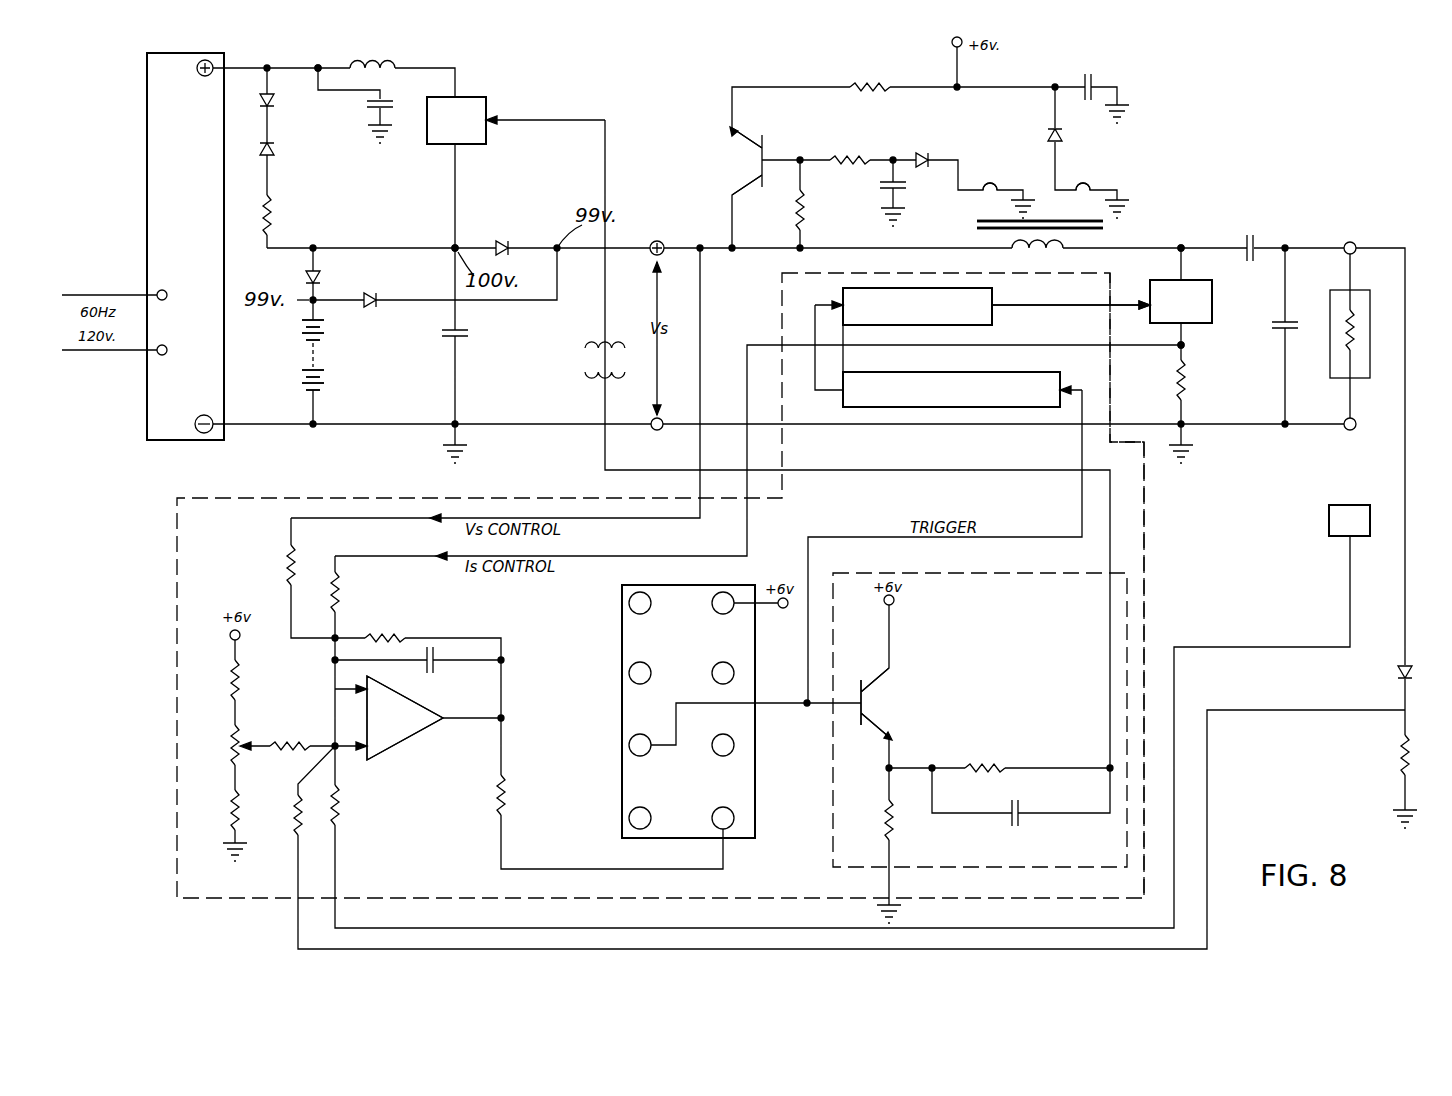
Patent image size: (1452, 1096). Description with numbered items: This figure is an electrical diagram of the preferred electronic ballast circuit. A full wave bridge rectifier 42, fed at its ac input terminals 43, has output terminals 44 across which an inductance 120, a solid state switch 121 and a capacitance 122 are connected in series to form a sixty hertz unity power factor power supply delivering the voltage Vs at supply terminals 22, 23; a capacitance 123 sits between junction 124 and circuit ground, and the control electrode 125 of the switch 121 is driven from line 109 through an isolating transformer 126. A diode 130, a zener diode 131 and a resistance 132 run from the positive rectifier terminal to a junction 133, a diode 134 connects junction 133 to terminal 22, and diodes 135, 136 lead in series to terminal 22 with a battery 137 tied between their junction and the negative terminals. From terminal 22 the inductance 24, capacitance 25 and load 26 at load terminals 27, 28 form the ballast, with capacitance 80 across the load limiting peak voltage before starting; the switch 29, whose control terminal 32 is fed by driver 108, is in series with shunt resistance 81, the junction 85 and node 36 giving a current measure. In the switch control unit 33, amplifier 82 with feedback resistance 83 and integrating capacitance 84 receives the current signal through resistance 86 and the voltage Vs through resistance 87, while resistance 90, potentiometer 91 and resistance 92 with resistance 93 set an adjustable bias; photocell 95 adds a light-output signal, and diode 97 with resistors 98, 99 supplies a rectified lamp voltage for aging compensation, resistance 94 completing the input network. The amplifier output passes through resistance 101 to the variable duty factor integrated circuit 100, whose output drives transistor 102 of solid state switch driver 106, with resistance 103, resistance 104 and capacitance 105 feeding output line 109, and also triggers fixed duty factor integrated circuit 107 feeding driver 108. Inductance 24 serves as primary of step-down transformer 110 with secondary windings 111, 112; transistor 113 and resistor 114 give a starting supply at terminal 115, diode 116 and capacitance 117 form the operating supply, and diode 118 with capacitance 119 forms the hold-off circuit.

The supply terminal 22 is at (658, 241).
The supply terminal 23 is at (659, 431).
The inductance 24 is at (1063, 252).
The capacitance 25 is at (1254, 244).
The load 26 is at (1371, 298).
The load terminal 27 is at (1350, 242).
The load terminal 28 is at (1348, 430).
The switch 29 is at (1212, 296).
The control terminal 32 is at (1114, 300).
The switch control unit 33 is at (1144, 612).
The junction 36 is at (1182, 246).
The rectifier 42 is at (147, 118).
The AC input terminals 43 is at (160, 359).
The terminals of the rectifier 44 is at (212, 62).
The capacitance 80 is at (1276, 331).
The resistance 81 is at (1187, 396).
The amplifier 82 is at (408, 735).
The feedback resistance 83 is at (390, 636).
The capacitance 84 is at (436, 668).
The junction 85 is at (1185, 347).
The resistance 86 is at (342, 592).
The resistance 87 is at (288, 560).
The resistance 90 is at (230, 678).
The potentiometer 91 is at (228, 748).
The resistance 92 is at (228, 808).
The resistance 93 is at (283, 742).
The resistor 94 is at (342, 810).
The photocell 95 is at (1329, 522).
The diode 97 is at (1396, 672).
The resistor 98 is at (292, 814).
The resistor 99 is at (1398, 756).
The integrated circuit 100 is at (622, 650).
The resistance 101 is at (508, 800).
The transistor 102 is at (858, 720).
The resistance 103 is at (884, 830).
The resistance 104 is at (986, 763).
The capacitance 105 is at (1020, 822).
The solid state switch driver 106 is at (975, 573).
The integrated circuit 107 is at (995, 372).
The solid state switch driver 108 is at (995, 322).
The output line 109 is at (1144, 508).
The step-down transformer 110 is at (1116, 228).
The secondary winding 111 is at (1085, 185).
The secondary winding 112 is at (990, 184).
The transistor 113 is at (765, 148).
The resistor 114 is at (864, 90).
The terminal 115 is at (952, 44).
The diode 116 is at (1062, 140).
The capacitance 117 is at (1095, 85).
The diode 118 is at (922, 152).
The capacitance 119 is at (902, 190).
The inductance 120 is at (375, 60).
The solid state switch 121 is at (486, 97).
The capacitance 122 is at (450, 338).
The capacitance 123 is at (386, 102).
The junction 124 is at (318, 68).
The control electrode 125 is at (546, 128).
The isolating transformer 126 is at (585, 352).
The diode 130 is at (275, 101).
The zener diode 131 is at (275, 145).
The resistance 132 is at (275, 215).
The junction 133 is at (455, 248).
The diode 134 is at (502, 240).
The diode 135 is at (321, 277).
The diode 136 is at (368, 307).
The battery 137 is at (310, 352).